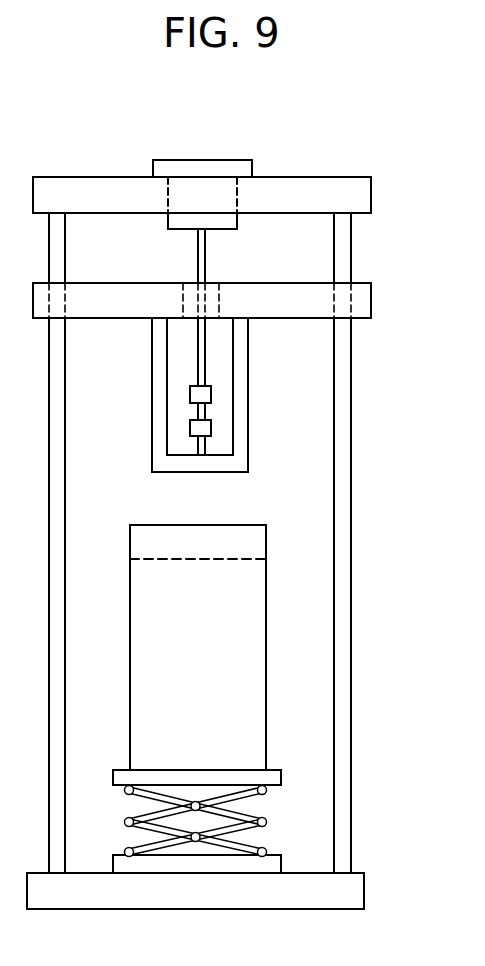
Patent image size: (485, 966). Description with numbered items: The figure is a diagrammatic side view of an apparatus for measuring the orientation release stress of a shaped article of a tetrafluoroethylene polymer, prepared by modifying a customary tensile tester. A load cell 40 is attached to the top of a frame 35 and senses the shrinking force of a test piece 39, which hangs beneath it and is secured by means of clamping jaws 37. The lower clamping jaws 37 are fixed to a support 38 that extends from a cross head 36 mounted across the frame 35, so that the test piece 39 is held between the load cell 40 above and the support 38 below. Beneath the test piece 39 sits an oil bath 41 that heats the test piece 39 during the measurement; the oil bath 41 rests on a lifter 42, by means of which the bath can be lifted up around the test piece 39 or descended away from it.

The frame 35 is at (343, 178).
The cross head 36 is at (370, 303).
The clamping jaws 37 is at (211, 391).
The support 38 is at (248, 448).
The test piece 39 is at (195, 412).
The load cell 40 is at (242, 160).
The oil bath 41 is at (245, 525).
The lifter 42 is at (275, 770).